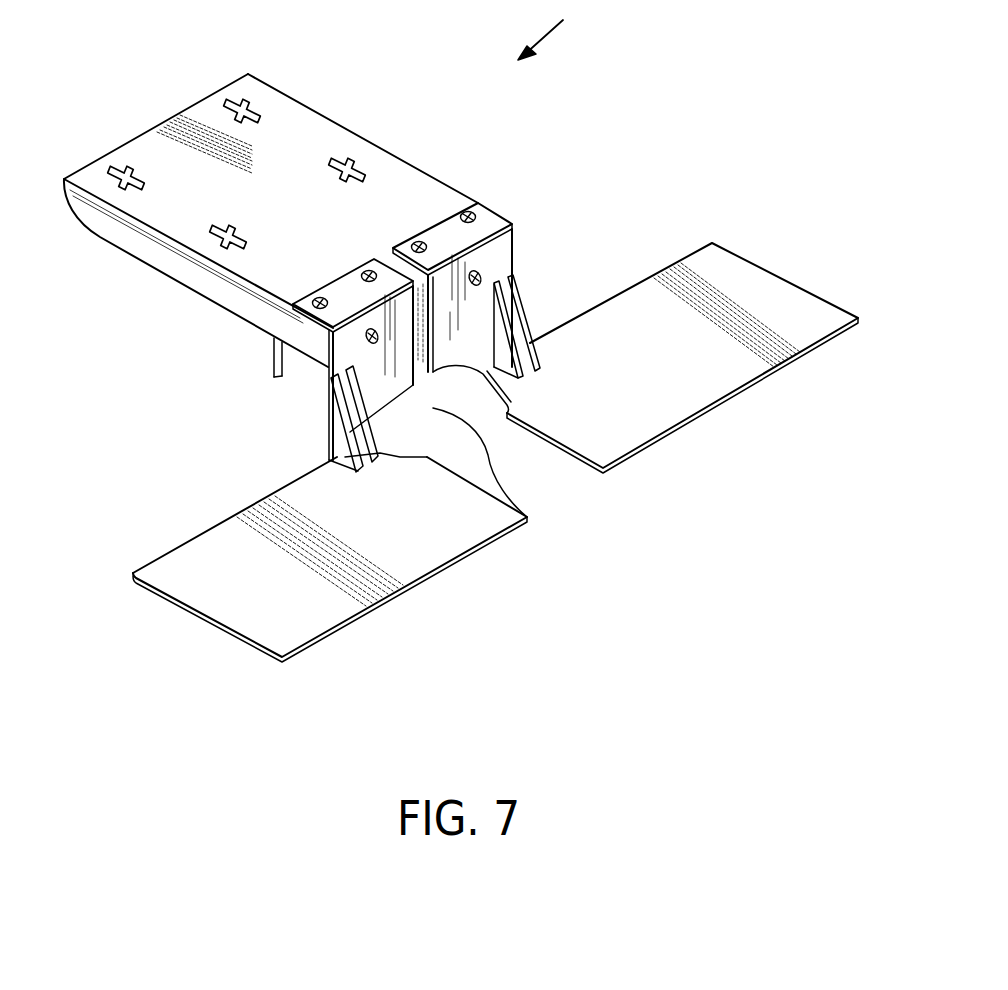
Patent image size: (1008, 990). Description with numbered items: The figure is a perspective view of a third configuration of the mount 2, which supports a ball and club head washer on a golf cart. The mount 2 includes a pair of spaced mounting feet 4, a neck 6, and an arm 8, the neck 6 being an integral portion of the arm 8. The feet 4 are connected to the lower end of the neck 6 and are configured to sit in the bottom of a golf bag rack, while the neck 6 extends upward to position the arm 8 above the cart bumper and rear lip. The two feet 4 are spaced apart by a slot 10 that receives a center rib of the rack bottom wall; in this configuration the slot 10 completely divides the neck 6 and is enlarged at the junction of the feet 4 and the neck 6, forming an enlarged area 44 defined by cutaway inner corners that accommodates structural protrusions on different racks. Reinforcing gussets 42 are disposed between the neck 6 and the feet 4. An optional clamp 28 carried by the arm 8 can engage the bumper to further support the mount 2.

The mount 2 is at (550, 35).
The arm 8 is at (345, 142).
The neck 6 is at (493, 263).
The slot 10 is at (417, 302).
The reinforcing gussets 42 is at (500, 312).
The mounting foot 4 is at (672, 392).
The enlarged area 44 is at (527, 517).
The clamp 28 is at (279, 377).